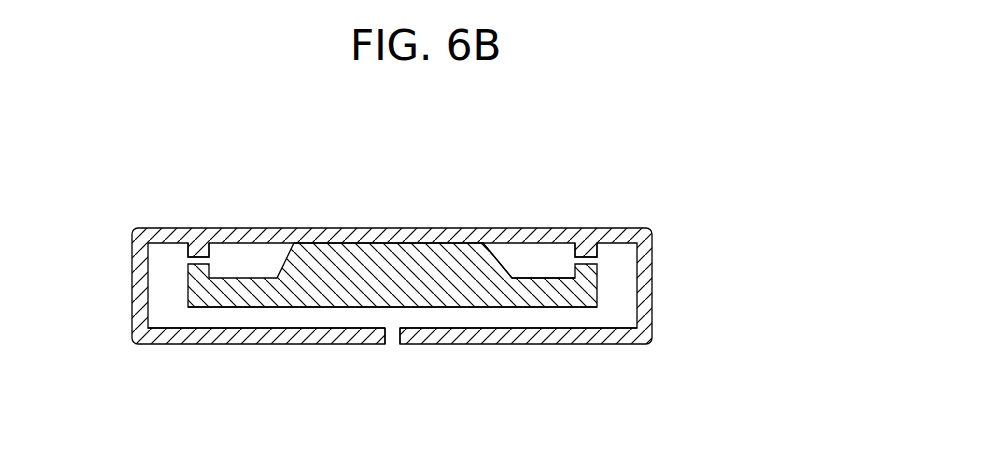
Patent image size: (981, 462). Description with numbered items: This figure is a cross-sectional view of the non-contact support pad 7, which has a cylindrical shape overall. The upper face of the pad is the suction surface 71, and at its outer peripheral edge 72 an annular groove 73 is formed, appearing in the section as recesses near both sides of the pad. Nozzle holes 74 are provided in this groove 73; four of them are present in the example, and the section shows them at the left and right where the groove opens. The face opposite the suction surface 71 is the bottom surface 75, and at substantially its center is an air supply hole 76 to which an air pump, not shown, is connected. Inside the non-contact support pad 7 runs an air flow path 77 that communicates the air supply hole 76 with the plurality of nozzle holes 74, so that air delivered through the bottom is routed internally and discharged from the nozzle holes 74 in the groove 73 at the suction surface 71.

The non-contact support pad 7 is at (663, 159).
The suction surface 71 is at (431, 243).
The outer peripheral edge 72 is at (602, 228).
The groove 73 is at (517, 278).
The nozzle holes 74 is at (222, 257).
The bottom surface 75 is at (495, 345).
The air supply hole 76 is at (388, 345).
The air flow path 77 is at (290, 318).